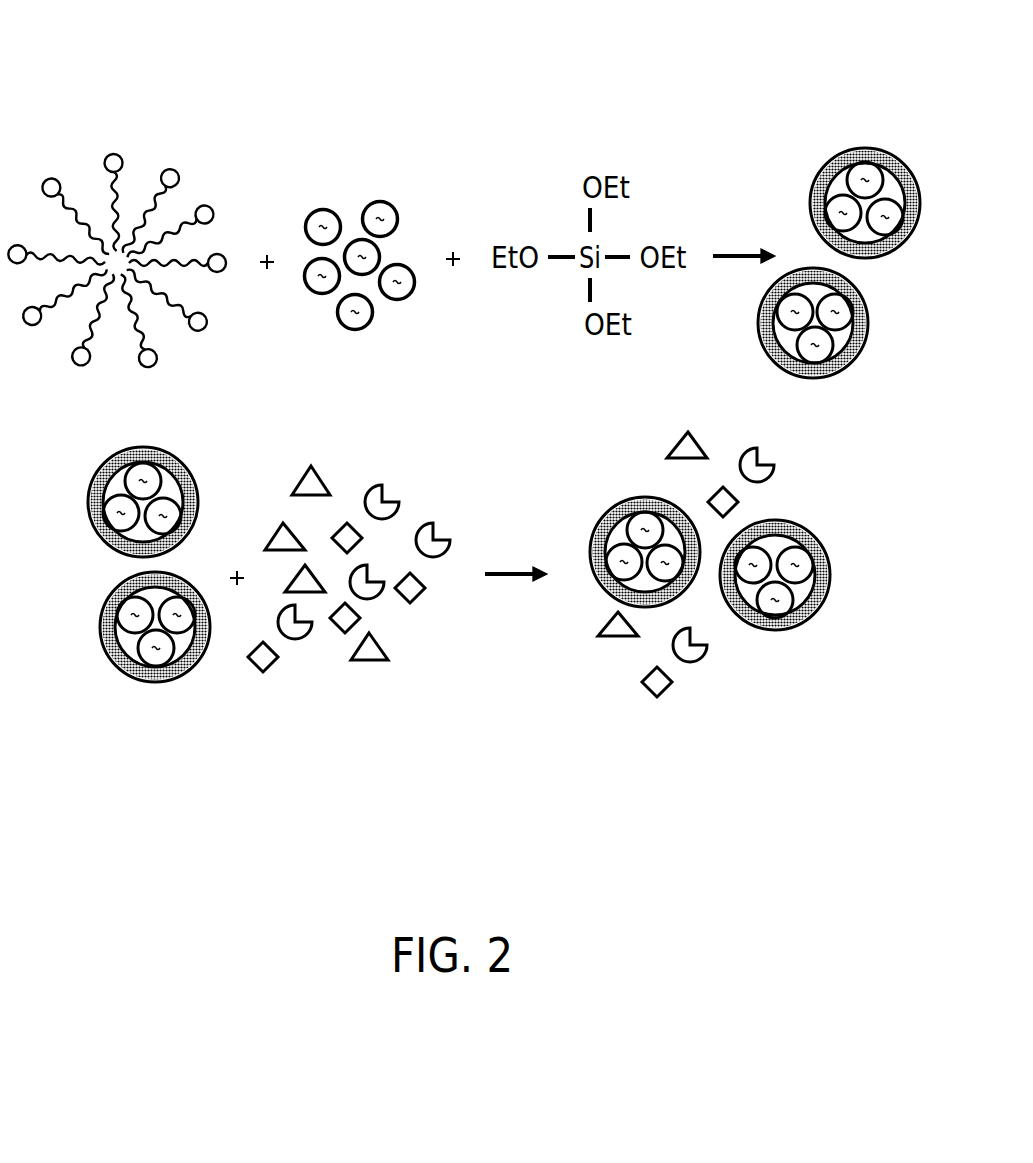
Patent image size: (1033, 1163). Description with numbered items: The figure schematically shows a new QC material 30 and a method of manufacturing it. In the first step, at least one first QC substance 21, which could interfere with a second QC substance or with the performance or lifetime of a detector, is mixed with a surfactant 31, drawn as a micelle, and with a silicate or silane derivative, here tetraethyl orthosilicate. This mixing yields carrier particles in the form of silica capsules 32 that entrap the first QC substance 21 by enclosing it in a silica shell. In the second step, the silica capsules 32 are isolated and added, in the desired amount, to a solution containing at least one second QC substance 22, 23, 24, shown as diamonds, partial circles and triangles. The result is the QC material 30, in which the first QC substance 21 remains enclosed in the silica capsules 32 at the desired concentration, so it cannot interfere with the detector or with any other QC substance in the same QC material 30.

The first QC substance 21 is at (329, 208).
The second QC substance 22 is at (270, 670).
The second QC substance 23 is at (305, 640).
The second QC substance 24 is at (387, 658).
The QC material 30 is at (748, 690).
The surfactant 31 is at (100, 138).
The silica capsules 32 is at (853, 152).